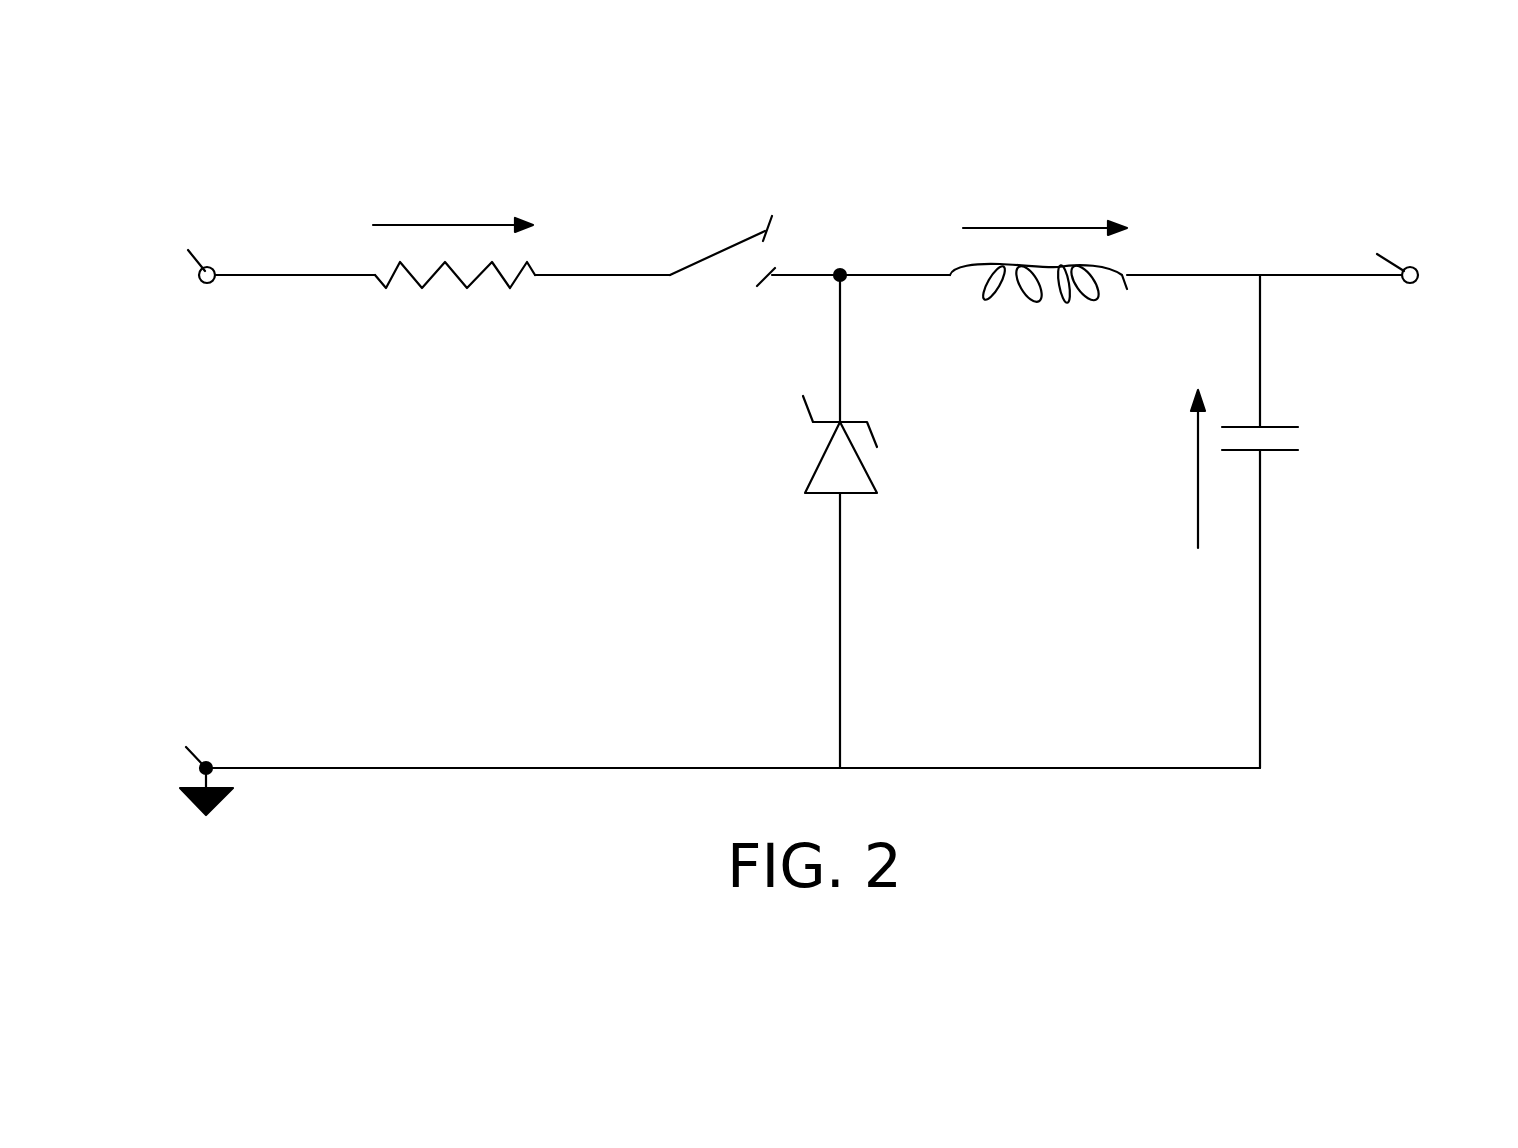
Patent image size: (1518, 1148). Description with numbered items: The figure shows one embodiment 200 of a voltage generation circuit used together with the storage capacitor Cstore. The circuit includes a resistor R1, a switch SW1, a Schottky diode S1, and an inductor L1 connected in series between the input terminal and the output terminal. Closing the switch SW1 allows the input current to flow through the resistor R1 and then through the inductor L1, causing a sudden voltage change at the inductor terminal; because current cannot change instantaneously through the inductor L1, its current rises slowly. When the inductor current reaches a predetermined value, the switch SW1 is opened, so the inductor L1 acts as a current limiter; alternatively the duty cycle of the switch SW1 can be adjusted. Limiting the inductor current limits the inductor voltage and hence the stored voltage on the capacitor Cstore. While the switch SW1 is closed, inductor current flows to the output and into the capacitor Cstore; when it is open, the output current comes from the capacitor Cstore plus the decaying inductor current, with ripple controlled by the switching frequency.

The voltage generation circuit embodiment 200 is at (824, 526).
The resistor R1 is at (535, 275).
The switch SW1 is at (755, 286).
The inductor L1 is at (1128, 276).
The Schottky diode S1 is at (874, 521).
The capacitor Cstore is at (1311, 521).